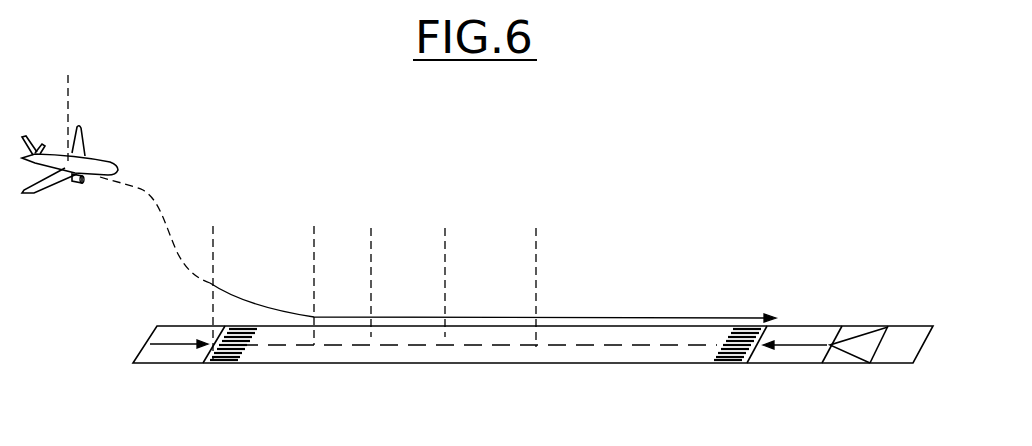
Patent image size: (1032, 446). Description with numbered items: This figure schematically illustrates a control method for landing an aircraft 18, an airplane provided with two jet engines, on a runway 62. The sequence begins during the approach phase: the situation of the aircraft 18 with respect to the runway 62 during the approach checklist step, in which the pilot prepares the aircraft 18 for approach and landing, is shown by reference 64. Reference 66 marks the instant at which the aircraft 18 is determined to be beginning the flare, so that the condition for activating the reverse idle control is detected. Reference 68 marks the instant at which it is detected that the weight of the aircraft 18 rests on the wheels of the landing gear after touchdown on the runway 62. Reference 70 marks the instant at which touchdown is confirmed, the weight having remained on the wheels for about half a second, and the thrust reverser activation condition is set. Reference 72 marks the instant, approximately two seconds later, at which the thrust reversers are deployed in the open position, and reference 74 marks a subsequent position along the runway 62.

The aircraft 18 is at (60, 190).
The runway 62 is at (503, 355).
The situation of the aircraft with respect to the runway during the approach checkli 64 is at (67, 106).
The instant of detection of the reverse idle activation condition 66 is at (212, 280).
The instant of weight-on-wheels detection 68 is at (313, 273).
The instant of touchdown confirmation 70 is at (370, 269).
The instant of thrust reverser deployment in the open position 72 is at (444, 269).
The runway point 74 is at (535, 274).